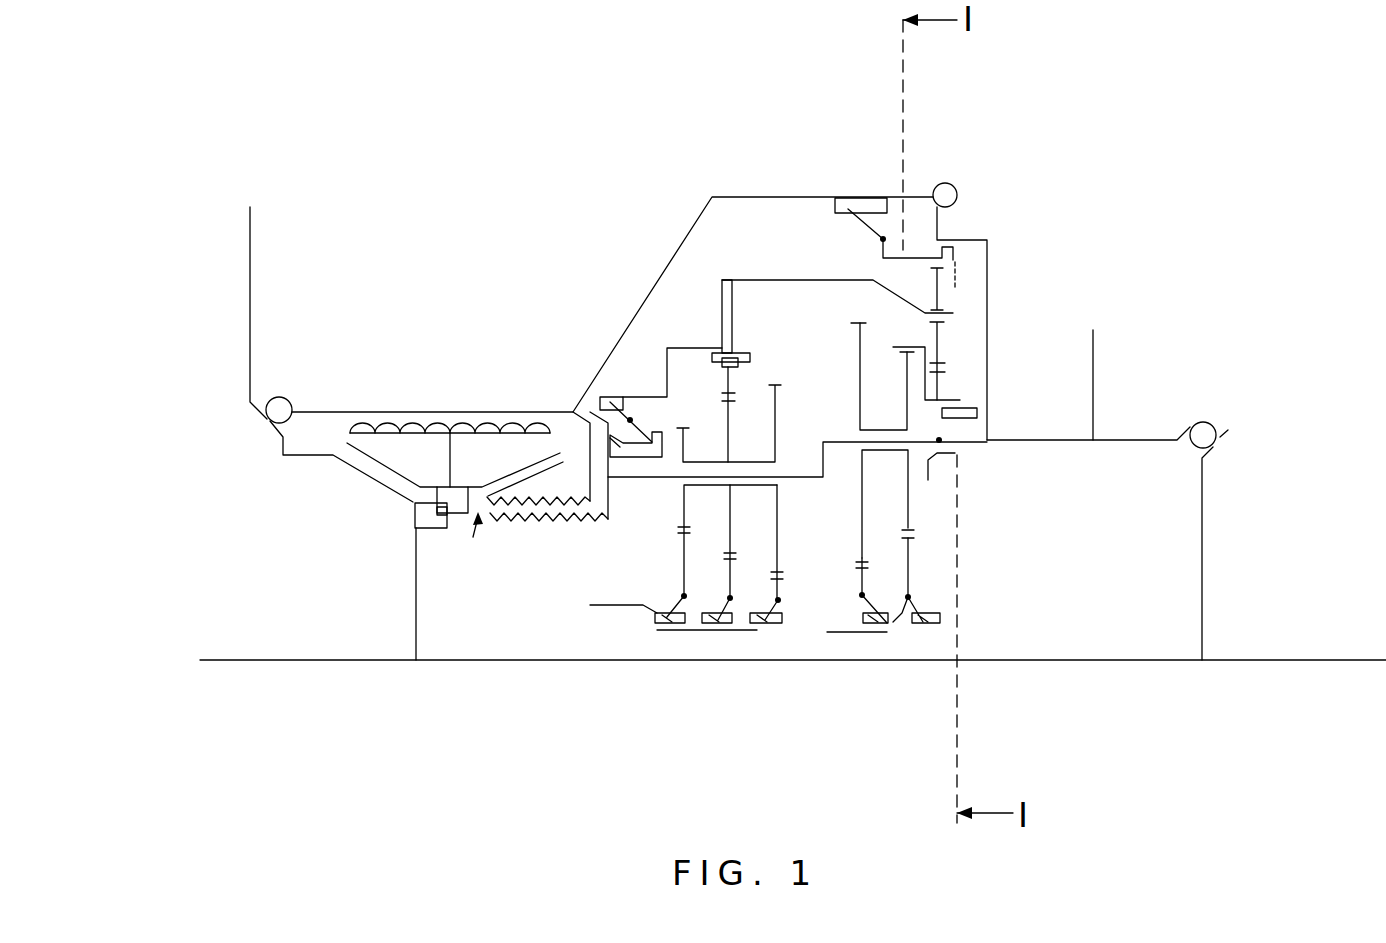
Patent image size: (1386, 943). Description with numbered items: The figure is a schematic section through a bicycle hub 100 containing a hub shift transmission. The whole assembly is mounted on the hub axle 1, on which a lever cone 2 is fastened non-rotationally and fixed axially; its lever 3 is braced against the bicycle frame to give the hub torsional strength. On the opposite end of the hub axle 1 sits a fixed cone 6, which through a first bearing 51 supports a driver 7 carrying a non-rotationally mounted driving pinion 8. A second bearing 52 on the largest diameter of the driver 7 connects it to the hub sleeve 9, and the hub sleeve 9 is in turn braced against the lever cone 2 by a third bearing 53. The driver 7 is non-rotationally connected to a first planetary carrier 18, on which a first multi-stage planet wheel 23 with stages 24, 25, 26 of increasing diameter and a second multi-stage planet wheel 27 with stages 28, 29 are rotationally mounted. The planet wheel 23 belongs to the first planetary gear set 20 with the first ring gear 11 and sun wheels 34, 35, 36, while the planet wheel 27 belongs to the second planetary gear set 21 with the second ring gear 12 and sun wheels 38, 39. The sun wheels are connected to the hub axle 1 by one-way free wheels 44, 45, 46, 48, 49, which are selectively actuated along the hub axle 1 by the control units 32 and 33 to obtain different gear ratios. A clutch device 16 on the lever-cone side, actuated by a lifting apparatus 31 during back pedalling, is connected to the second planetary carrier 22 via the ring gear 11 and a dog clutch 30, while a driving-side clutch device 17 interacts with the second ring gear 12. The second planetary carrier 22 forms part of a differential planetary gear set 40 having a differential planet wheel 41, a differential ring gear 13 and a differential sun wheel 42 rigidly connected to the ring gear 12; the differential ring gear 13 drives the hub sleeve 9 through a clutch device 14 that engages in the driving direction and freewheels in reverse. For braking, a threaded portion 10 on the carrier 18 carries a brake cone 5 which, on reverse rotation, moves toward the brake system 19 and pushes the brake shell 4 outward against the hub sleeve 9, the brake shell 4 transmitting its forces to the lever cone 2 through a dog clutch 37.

The hub 100 is at (427, 172).
The hub axle 1 is at (305, 655).
The lever cone 2 is at (415, 540).
The lever 3 is at (250, 267).
The brake shell 4 is at (405, 448).
The brake cone 5 is at (530, 488).
The fixed cone 6 is at (1203, 505).
The driver 7 is at (1038, 440).
The driving pinion 8 is at (1093, 385).
The hub sleeve 9 is at (672, 245).
The threaded portion 10 is at (510, 517).
The first ring gear 11 is at (728, 383).
The second ring gear 12 is at (957, 313).
The differential ring gear 13 is at (883, 239).
The clutch device 14 is at (942, 247).
The clutch device 16 is at (630, 420).
The clutch device 17 is at (920, 457).
The first planetary carrier 18 is at (805, 480).
The brake system 19 is at (445, 514).
The first planetary gear set 20 is at (657, 527).
The second planetary gear set 21 is at (925, 502).
The second planetary carrier 22 is at (818, 280).
The first multi-stage planet wheel 23 is at (684, 490).
The stage 24 is at (684, 509).
The stage 25 is at (731, 530).
The stage 26 is at (778, 520).
The second multi-stage planet wheel 27 is at (908, 507).
The stage 28 is at (908, 520).
The stage 29 is at (862, 508).
The dog clutch 30 is at (728, 360).
The lifting apparatus 31 is at (650, 443).
The control unit 32 is at (596, 605).
The control unit 33 is at (860, 632).
The sun wheel 34 is at (684, 553).
The sun wheel 35 is at (735, 625).
The sun wheel 36 is at (785, 617).
The dog clutch 37 is at (443, 515).
The sun wheel 38 is at (908, 577).
The sun wheel 39 is at (870, 625).
The differential planetary gear set 40 is at (950, 285).
The differential planet wheel 41 is at (935, 348).
The differential sun wheel 42 is at (935, 388).
The free wheel 44 is at (660, 620).
The free wheel 45 is at (715, 622).
The free wheel 46 is at (765, 622).
The free wheel 48 is at (923, 623).
The free wheel 49 is at (885, 625).
The first bearing 51 is at (1210, 410).
The second bearing 52 is at (957, 193).
The third bearing 53 is at (280, 404).